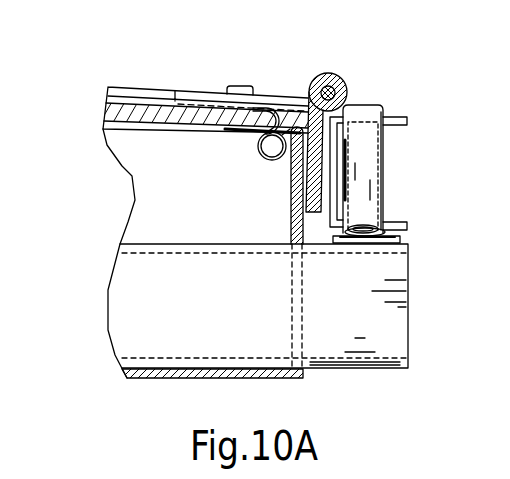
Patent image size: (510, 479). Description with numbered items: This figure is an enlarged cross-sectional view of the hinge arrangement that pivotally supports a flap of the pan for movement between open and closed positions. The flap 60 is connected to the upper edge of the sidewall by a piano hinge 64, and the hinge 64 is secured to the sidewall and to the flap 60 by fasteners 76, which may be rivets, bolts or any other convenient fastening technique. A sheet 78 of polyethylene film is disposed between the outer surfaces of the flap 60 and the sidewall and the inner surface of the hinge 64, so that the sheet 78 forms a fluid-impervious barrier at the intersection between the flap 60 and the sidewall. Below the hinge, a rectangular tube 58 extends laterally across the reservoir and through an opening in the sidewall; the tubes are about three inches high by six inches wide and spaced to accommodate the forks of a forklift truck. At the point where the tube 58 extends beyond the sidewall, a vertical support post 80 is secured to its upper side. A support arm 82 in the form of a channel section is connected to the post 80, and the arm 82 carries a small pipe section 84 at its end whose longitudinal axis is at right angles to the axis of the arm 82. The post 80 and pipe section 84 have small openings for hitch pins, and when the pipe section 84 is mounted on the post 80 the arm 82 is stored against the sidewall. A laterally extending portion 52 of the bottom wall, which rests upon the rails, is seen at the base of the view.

The laterally extending portion 52 is at (170, 382).
The rectangular tube 58 is at (380, 327).
The flap 60 is at (108, 112).
The piano hinge 64 is at (327, 72).
The fastener 76 is at (250, 86).
The sheet of polyethylene film 78 is at (251, 170).
The vertical support post 80 is at (367, 160).
The support arm 82 is at (400, 117).
The pipe section 84 is at (367, 187).